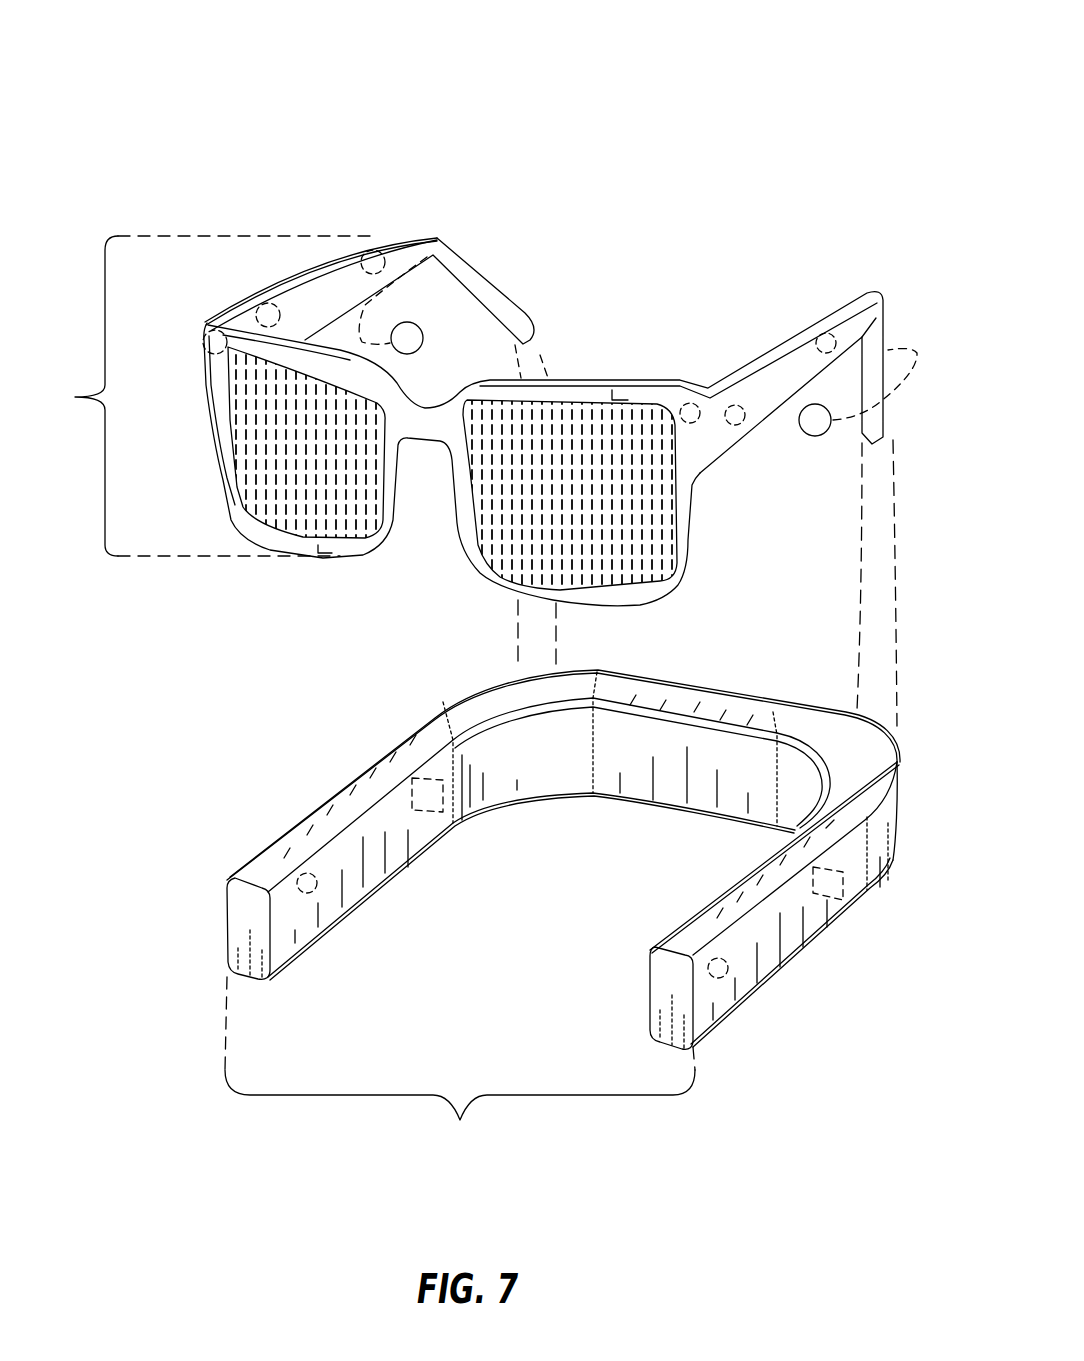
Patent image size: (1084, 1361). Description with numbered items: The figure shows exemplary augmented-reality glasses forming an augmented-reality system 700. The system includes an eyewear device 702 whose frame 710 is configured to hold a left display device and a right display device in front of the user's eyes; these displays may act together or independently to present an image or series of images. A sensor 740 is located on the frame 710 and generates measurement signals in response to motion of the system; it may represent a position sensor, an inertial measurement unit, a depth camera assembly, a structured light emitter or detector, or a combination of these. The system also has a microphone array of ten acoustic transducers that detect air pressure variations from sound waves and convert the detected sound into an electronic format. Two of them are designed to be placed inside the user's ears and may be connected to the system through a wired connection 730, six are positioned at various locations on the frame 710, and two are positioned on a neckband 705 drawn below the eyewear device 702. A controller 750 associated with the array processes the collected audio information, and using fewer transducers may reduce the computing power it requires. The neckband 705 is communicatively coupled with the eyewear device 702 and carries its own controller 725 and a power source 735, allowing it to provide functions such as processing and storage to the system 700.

The augmented-reality system 700 is at (126, 124).
The eyewear device 702 is at (208, 396).
The neckband 705 is at (562, 910).
The frame 710 is at (437, 240).
The controller 725 is at (822, 893).
The wired connection 730 is at (885, 612).
The power source 735 is at (432, 798).
The sensor 740 is at (322, 550).
The controller 750 is at (620, 393).